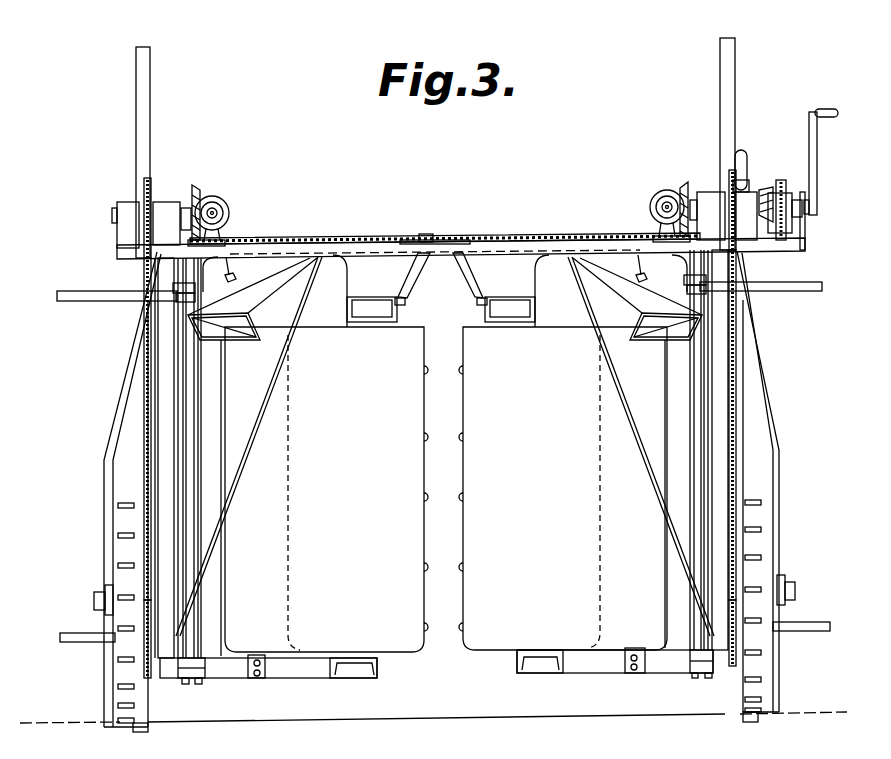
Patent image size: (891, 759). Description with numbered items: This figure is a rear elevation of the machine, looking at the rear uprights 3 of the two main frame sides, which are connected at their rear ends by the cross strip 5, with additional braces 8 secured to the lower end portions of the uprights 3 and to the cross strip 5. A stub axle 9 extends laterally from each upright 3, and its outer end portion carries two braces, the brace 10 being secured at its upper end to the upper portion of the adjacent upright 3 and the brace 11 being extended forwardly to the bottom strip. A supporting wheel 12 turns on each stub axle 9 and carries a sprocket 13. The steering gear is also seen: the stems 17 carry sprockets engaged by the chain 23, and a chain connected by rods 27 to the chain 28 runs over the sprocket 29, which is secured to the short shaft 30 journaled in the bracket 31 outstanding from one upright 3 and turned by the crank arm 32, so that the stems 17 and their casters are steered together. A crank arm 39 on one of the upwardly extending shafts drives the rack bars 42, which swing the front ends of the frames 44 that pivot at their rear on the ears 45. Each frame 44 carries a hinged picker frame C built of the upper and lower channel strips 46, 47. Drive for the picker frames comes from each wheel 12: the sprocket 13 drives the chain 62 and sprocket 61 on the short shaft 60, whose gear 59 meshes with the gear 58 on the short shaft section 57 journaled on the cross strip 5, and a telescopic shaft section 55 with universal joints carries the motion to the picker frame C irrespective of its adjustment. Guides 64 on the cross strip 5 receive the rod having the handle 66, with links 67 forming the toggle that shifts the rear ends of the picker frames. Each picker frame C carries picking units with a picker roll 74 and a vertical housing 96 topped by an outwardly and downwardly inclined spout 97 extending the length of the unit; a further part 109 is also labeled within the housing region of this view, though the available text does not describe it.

The upright 3 is at (167, 433).
The cross strip 5 is at (507, 248).
The brace 8 is at (272, 405).
The stub axle 9 is at (94, 599).
The brace 10 is at (114, 412).
The brace 11 is at (103, 590).
The supporting wheel 12 is at (120, 705).
The sprocket 13 is at (148, 640).
The stem 17 is at (147, 102).
The chain 23 is at (355, 240).
The rod 27 is at (759, 192).
The chain 28 is at (770, 197).
The sprocket 29 is at (787, 186).
The short shaft 30 is at (810, 205).
The bracket 31 is at (807, 229).
The crank arm 32 is at (818, 154).
The crank arm 39 is at (736, 157).
The rack bar 42 is at (62, 291).
The frame 44 is at (177, 298).
The ear 45 is at (176, 288).
The upper channel strip 46 is at (367, 303).
The lower channel strip 47 is at (348, 668).
The telescopic shaft section 55 is at (232, 256).
The short shaft section 57 is at (218, 212).
The gear 58 is at (672, 190).
The gear 59 is at (199, 190).
The short shaft 60 is at (114, 214).
The sprocket 61 is at (150, 187).
The chain 62 is at (145, 365).
The guide 64 is at (442, 238).
The handle 66 is at (428, 234).
The link 67 is at (415, 272).
The picker roll 74 is at (428, 500).
The vertical housing 96 is at (446, 489).
The spout 97 is at (227, 342).
The partition 109 is at (218, 567).
The picker frame C is at (476, 317).